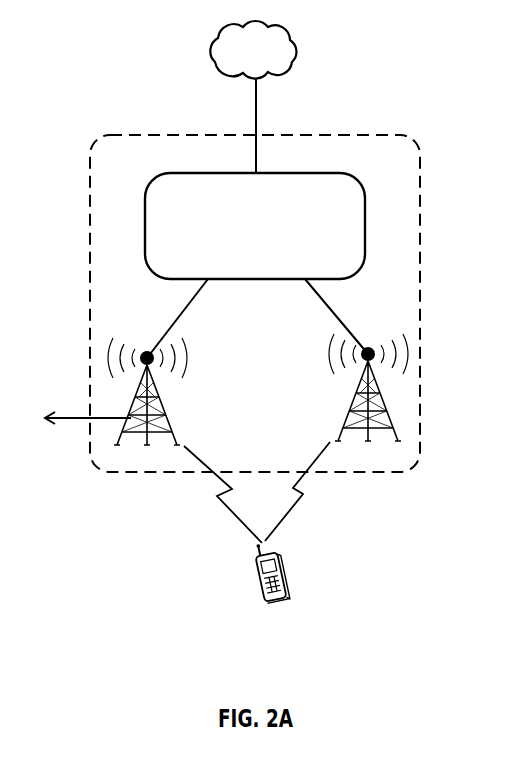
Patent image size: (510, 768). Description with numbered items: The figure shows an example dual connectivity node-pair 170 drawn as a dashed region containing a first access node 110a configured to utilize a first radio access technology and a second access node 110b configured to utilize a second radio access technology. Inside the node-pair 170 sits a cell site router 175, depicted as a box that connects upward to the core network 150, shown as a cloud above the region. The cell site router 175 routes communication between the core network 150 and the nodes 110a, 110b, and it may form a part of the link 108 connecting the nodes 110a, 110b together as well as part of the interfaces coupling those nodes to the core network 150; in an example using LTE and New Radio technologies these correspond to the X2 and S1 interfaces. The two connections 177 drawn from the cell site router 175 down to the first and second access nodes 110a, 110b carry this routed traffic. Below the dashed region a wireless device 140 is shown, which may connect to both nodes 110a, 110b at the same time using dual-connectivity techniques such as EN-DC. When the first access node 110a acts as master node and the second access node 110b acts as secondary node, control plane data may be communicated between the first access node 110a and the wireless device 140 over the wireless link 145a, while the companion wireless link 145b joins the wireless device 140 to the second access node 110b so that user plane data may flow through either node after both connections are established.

The core network 150 is at (272, 58).
The dual connectivity node-pair 170 is at (355, 134).
The cell site router 175 is at (272, 248).
The backhaul links 177 is at (326, 300).
The first access node 110a is at (167, 416).
The second access node 110b is at (345, 425).
The link 108 is at (76, 418).
The wireless link 145a is at (232, 518).
The wireless link 145b is at (278, 516).
The wireless device 140 is at (257, 579).